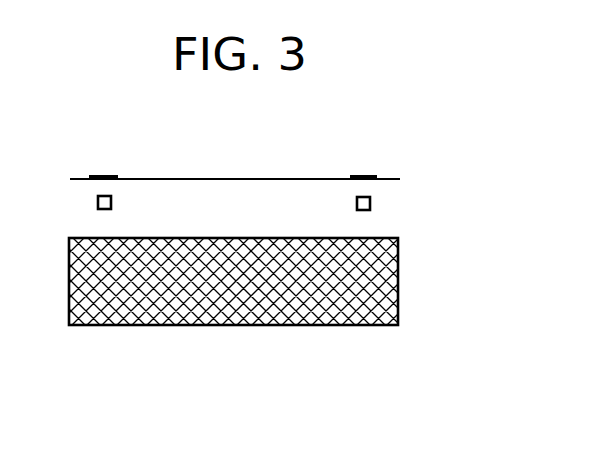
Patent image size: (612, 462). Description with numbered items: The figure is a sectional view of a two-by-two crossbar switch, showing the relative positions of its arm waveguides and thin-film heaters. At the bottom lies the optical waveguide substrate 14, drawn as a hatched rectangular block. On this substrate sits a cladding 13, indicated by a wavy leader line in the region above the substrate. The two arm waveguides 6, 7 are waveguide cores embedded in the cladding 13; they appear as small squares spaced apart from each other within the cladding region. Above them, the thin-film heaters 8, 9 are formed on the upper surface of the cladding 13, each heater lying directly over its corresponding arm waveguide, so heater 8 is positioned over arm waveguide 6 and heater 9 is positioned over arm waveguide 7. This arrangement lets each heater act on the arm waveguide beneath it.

The arm waveguide 6 is at (96, 205).
The arm waveguide 7 is at (372, 207).
The thin-film heater 8 is at (107, 175).
The thin-film heater 9 is at (364, 175).
The cladding 13 is at (320, 202).
The optical waveguide substrate 14 is at (399, 313).